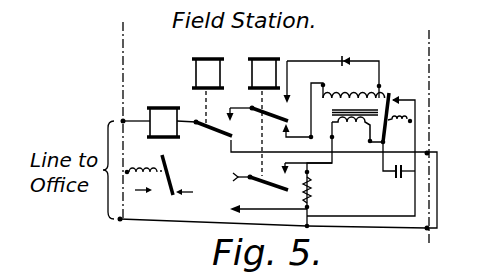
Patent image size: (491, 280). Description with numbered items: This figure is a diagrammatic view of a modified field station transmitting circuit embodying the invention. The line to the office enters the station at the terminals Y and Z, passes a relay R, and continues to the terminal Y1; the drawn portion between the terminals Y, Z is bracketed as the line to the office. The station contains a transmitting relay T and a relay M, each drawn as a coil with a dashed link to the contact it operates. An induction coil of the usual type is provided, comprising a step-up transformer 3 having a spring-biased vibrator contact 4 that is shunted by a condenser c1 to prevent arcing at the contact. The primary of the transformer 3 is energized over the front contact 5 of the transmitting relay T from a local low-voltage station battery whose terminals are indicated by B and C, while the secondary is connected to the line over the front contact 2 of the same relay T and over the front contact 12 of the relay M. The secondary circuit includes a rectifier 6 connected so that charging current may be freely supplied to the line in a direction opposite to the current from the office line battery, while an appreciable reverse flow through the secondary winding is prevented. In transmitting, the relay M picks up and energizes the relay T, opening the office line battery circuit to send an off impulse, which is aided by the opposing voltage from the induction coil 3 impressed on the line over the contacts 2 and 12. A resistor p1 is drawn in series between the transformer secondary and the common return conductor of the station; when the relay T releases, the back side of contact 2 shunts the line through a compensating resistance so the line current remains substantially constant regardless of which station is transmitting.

The line terminal Y is at (122, 118).
The line terminal Y1 is at (429, 150).
The line terminal Z is at (116, 222).
The relay R is at (163, 113).
The relay M is at (208, 82).
The transmitting relay T is at (264, 108).
The front contact of relay M 12 is at (214, 125).
The front contact of relay T 2 is at (271, 120).
The rectifier 6 is at (343, 56).
The step-up transformer 3 is at (331, 112).
The vibrator contact 4 is at (387, 129).
The front contact of relay T 5 is at (269, 176).
The battery terminal B is at (234, 179).
The battery terminal C is at (260, 210).
The resistance p1 is at (312, 188).
The condenser c1 is at (397, 178).